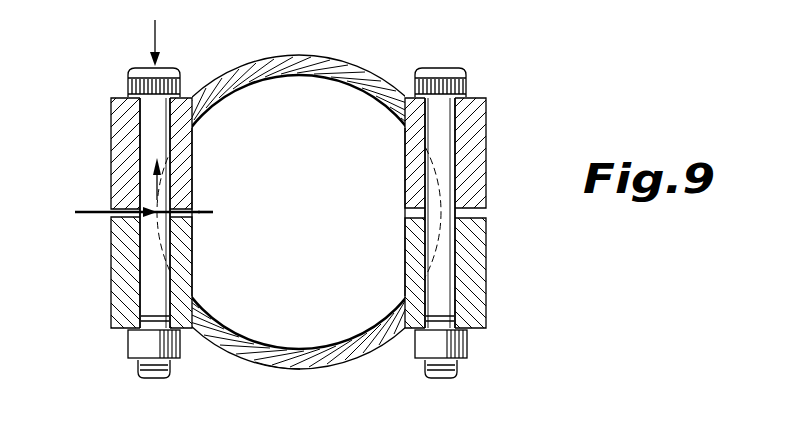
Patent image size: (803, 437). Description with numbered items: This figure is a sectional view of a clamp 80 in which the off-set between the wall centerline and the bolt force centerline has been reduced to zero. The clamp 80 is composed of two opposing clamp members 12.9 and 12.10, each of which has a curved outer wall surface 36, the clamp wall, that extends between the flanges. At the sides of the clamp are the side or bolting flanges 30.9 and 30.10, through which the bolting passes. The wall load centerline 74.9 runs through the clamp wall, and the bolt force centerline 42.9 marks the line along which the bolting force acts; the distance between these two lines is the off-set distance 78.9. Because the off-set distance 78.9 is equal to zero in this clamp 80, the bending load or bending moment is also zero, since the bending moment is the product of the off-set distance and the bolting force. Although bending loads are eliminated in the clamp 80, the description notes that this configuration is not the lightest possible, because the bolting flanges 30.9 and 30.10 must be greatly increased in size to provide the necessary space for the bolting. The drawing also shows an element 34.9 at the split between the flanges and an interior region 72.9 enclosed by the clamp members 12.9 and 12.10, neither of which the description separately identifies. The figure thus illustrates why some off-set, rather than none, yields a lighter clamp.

The clamp member 12.9 is at (352, 66).
The clamp member 12.10 is at (381, 346).
The bolting flange 30.9 is at (498, 130).
The bolting flange 30.10 is at (500, 294).
The intermediate plate 34.9 is at (110, 216).
The curved outer wall surface 36 is at (276, 368).
The bolt force centerline 42.9 is at (160, 36).
The interior cavity 72.9 is at (316, 226).
The wall load centerline 74.9 is at (305, 68).
The off-set distance 78.9 is at (212, 211).
The clamp 80 is at (98, 105).